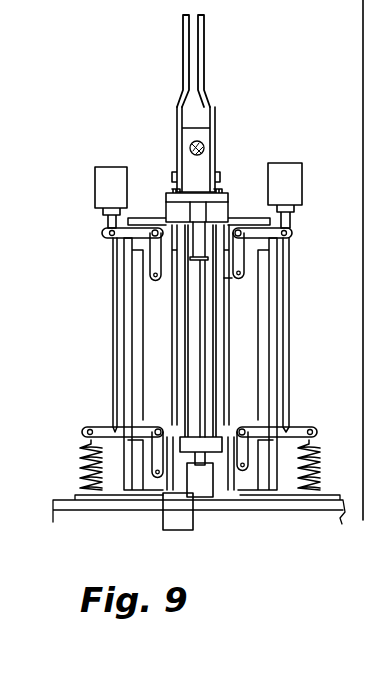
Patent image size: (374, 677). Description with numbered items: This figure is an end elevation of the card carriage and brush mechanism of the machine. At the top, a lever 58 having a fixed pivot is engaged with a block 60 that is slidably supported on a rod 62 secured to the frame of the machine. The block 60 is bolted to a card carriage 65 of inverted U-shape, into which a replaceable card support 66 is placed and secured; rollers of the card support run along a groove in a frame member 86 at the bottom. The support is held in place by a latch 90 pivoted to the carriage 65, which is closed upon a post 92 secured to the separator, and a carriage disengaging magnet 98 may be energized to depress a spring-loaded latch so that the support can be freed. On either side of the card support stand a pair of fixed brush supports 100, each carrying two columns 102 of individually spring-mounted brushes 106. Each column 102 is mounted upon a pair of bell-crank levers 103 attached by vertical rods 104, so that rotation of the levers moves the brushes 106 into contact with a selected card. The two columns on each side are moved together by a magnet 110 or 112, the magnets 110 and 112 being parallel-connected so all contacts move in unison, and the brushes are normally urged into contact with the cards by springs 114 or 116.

The lever 58 is at (207, 62).
The block 60 is at (200, 168).
The rod 62 is at (205, 138).
The card carriage 65 is at (222, 212).
The card support 66 is at (168, 344).
The frame member 86 is at (205, 487).
The latch 90 is at (178, 215).
The post 92 is at (200, 257).
The carriage disengaging magnet 98 is at (165, 517).
The brush supports 100 is at (122, 257).
The columns 102 is at (150, 380).
The bell-crank levers 103 is at (102, 233).
The vertical rods 104 is at (113, 283).
The brushes 106 is at (231, 290).
The magnet 110 is at (95, 192).
The magnet 112 is at (300, 172).
The spring 114 is at (78, 462).
The spring 116 is at (320, 462).